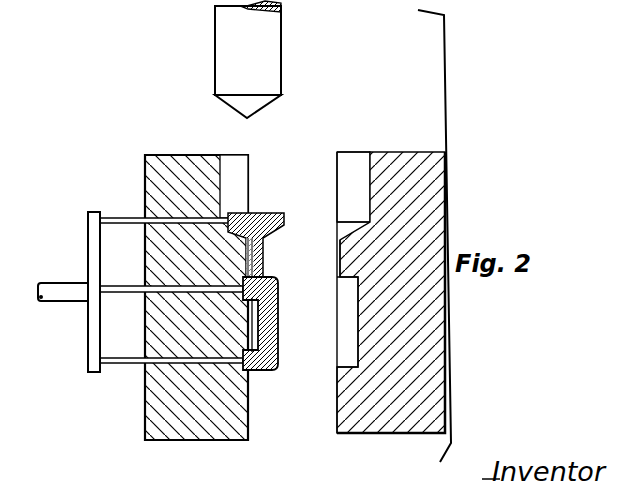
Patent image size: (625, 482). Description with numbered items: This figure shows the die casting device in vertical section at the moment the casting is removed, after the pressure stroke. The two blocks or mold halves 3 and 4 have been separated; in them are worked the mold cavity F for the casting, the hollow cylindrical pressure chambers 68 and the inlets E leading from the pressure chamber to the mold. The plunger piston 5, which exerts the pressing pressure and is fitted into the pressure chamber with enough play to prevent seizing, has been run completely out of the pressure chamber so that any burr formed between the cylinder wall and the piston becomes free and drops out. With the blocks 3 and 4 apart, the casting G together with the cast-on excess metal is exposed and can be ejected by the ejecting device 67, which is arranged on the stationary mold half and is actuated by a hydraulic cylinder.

The plunger piston 5 is at (272, 59).
The block or mold half 3 is at (215, 425).
The block or mold half 4 is at (400, 434).
The hollow cylindrical pressure chamber 68 is at (235, 182).
The ejecting device 67 is at (125, 240).
The inlet E is at (244, 257).
The casting G is at (279, 320).
The mold cavity F is at (350, 352).